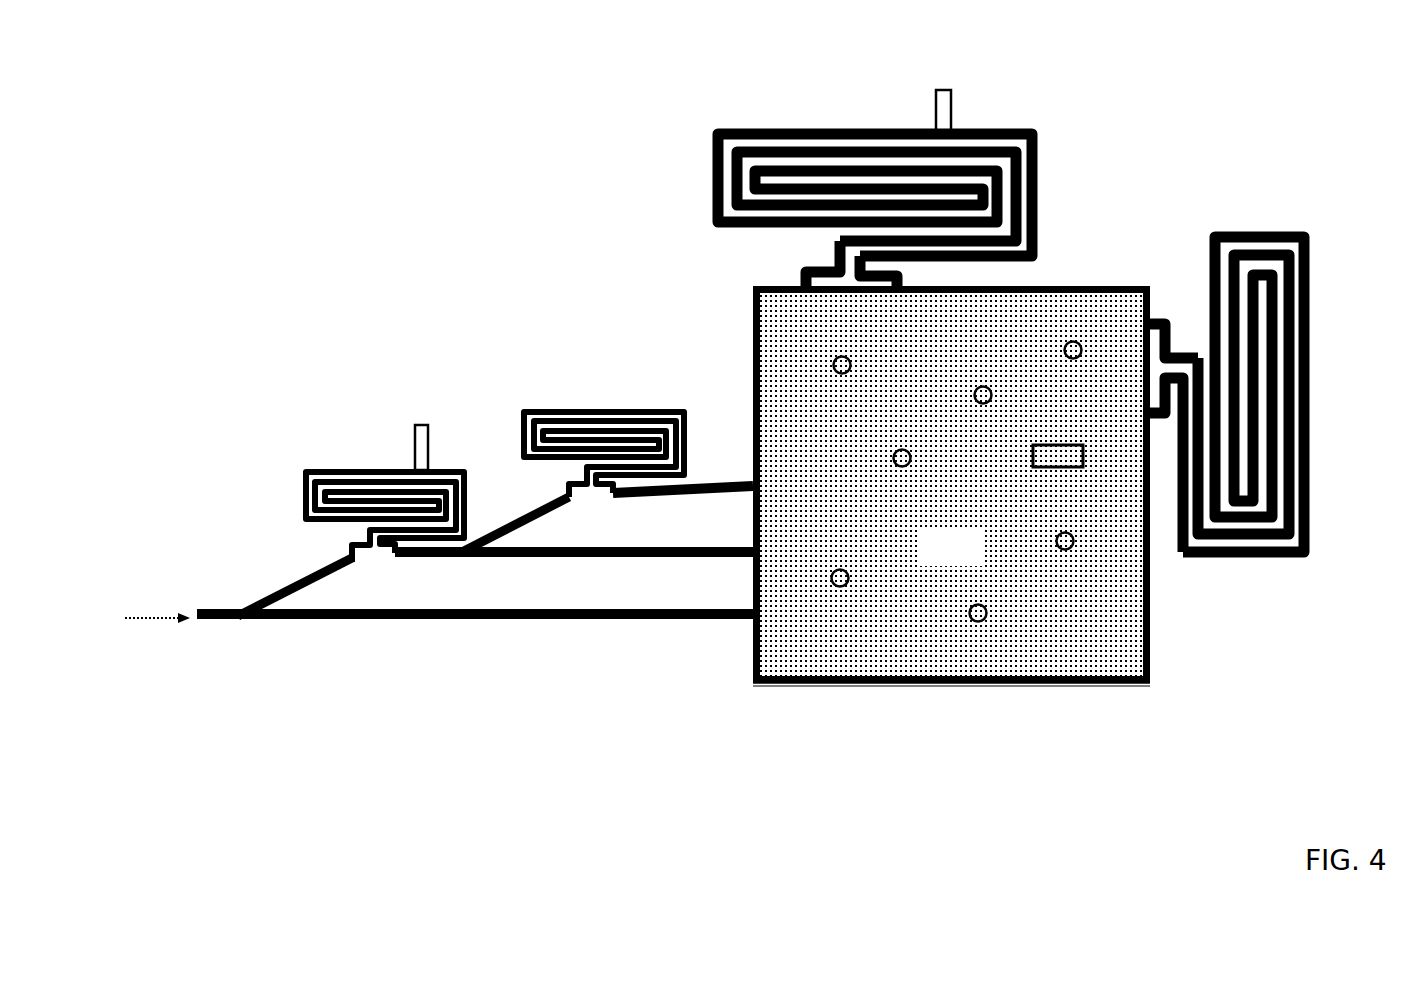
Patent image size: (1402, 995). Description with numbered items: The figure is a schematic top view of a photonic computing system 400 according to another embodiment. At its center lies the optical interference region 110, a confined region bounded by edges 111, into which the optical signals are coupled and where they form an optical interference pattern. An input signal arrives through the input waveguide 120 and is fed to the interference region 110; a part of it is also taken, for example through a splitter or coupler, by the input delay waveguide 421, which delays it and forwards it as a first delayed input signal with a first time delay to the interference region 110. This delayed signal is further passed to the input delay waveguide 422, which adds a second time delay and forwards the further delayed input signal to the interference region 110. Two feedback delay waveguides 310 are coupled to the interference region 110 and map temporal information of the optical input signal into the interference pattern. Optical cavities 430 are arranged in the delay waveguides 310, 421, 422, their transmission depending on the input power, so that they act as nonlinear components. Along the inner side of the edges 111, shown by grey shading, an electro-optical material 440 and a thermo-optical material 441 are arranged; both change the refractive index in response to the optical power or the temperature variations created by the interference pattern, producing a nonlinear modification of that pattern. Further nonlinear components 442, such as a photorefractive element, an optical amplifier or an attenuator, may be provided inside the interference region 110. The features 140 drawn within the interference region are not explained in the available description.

The optical interference region 110 is at (975, 563).
The edges 111 is at (805, 686).
The input waveguides 120 is at (468, 620).
The via 140 is at (975, 395).
The feedback delay waveguides 310 is at (825, 128).
The photonic computing system 400 is at (1220, 742).
The input delay waveguide 421 is at (366, 470).
The input delay waveguide 422 is at (602, 410).
The optical cavities 430 is at (948, 90).
The electro-optical material 440 is at (1112, 286).
The thermo-optical material 441 is at (966, 686).
The further nonlinear components 442 is at (1055, 458).